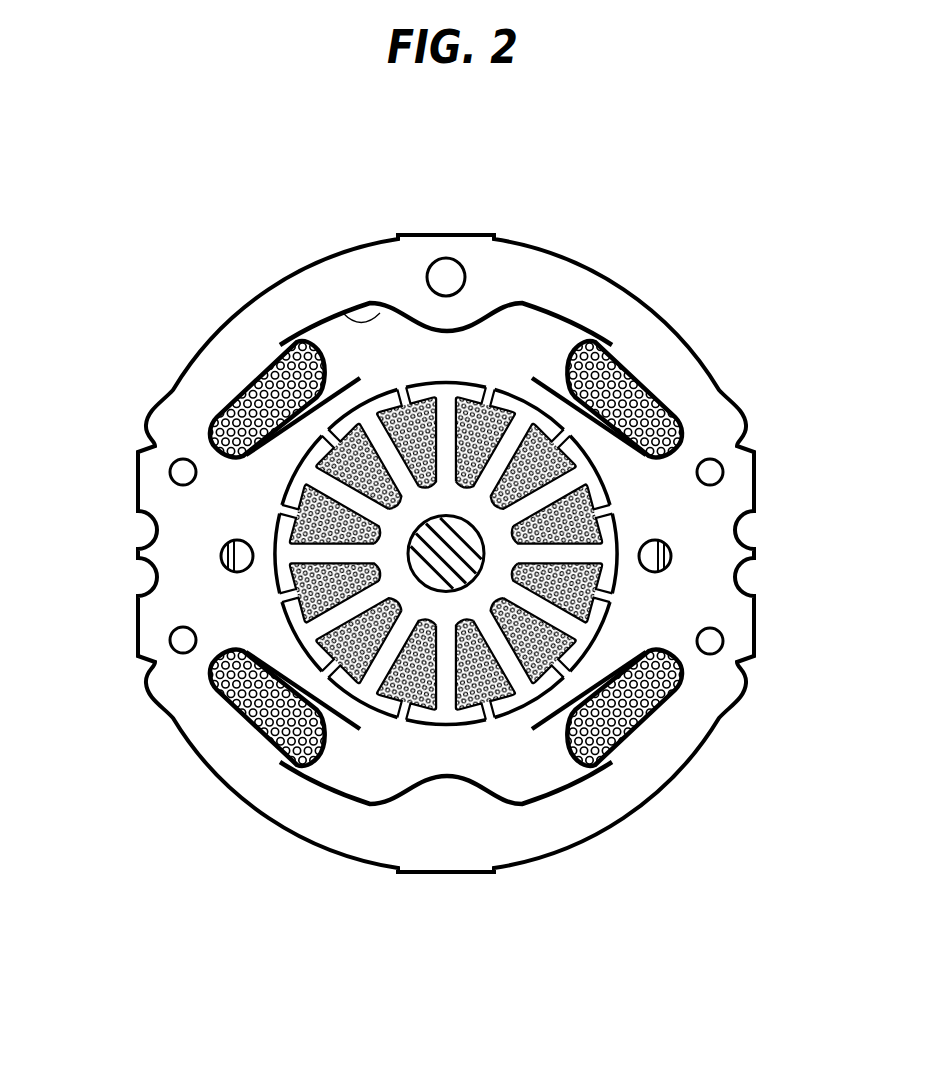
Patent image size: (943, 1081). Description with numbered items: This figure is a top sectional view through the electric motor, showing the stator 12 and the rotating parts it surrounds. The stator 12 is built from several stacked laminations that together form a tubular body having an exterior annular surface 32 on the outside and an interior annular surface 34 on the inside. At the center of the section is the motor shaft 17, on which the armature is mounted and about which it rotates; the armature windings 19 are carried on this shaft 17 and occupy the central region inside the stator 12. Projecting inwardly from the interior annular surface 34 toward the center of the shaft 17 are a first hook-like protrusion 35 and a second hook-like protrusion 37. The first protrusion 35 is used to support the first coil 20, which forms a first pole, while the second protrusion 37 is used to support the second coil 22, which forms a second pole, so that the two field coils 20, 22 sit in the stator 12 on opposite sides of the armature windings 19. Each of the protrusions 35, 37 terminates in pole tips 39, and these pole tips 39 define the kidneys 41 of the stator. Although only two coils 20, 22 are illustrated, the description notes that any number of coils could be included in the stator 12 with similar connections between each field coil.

The stator 12 is at (386, 871).
The motor shaft 17 is at (458, 537).
The armature windings 19 is at (487, 708).
The first coil 20 is at (238, 725).
The second coil 22 is at (672, 718).
The exterior annular surface 32 is at (227, 313).
The interior annular surface 34 is at (337, 311).
The first hook-like protrusion 35 is at (213, 512).
The second hook-like protrusion 37 is at (650, 607).
The pole tips 39 is at (550, 402).
The kidneys 41 is at (570, 360).